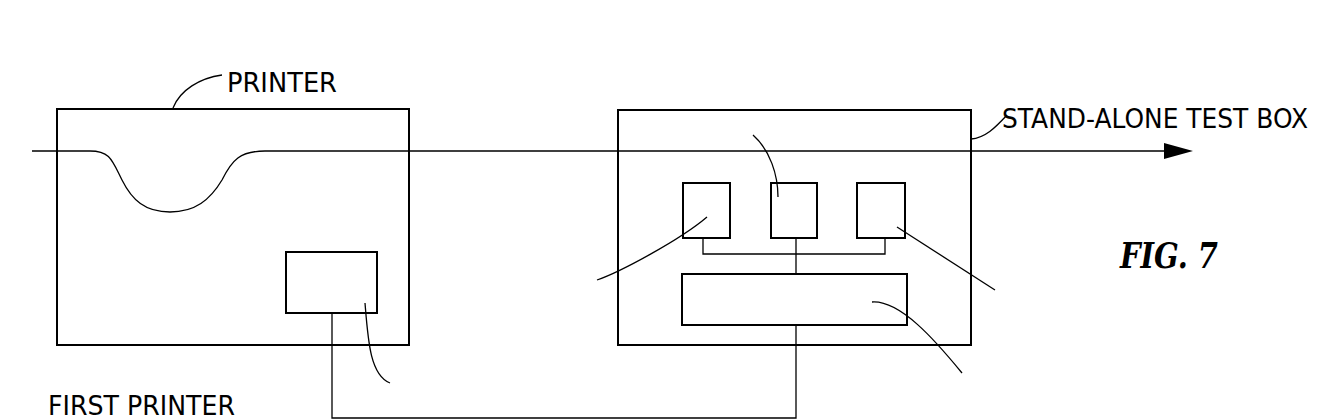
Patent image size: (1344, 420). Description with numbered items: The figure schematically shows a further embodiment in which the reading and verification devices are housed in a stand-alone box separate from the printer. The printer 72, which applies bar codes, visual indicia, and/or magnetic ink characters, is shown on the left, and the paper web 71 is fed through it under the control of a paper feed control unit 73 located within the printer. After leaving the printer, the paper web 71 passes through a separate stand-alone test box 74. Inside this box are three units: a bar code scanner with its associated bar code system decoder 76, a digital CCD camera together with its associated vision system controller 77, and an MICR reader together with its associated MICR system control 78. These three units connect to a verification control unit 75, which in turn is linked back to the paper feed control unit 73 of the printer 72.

The paper web 71 is at (433, 150).
The printer 72 is at (115, 130).
The paper feed control unit 73 is at (357, 287).
The stand-alone test box 74 is at (692, 110).
The verification control unit 75 is at (723, 297).
The bar code scanner with bar code system decoder 76 is at (700, 203).
The digital CCD camera with vision system controller 77 is at (790, 193).
The MICR reader with MICR system control 78 is at (888, 212).